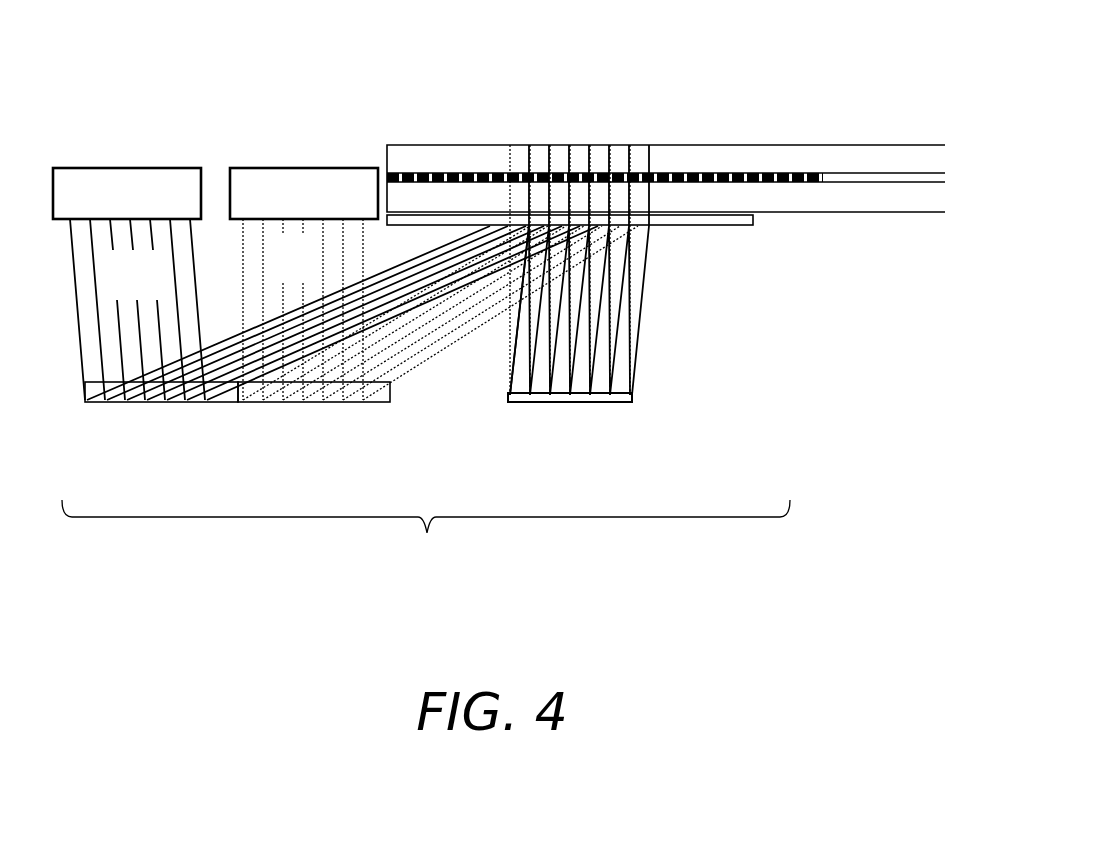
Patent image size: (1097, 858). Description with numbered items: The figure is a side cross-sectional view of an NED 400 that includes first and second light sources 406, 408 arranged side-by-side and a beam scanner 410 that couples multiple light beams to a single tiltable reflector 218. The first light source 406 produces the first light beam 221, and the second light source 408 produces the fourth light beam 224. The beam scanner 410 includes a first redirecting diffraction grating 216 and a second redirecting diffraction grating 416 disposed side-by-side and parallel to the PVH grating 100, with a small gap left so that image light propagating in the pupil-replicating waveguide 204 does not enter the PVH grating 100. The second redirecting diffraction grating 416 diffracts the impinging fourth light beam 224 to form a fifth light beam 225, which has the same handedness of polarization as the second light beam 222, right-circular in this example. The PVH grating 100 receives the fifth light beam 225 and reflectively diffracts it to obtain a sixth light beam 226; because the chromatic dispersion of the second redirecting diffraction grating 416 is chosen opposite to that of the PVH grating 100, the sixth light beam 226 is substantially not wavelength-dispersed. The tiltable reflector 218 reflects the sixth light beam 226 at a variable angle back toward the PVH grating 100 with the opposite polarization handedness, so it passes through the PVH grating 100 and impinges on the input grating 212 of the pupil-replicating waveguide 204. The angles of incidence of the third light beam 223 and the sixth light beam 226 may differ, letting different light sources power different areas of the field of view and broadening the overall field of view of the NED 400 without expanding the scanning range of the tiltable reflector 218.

The NED 400 is at (466, 36).
The first light source 406 is at (106, 207).
The second light source 408 is at (283, 207).
The first light beam 221 is at (119, 289).
The fourth light beam 224 is at (272, 269).
The second light beam 222 is at (222, 316).
The fifth light beam 225 is at (416, 378).
The first redirecting diffraction grating 216 is at (120, 402).
The second redirecting diffraction grating 416 is at (290, 402).
The pupil-replicating waveguide 204 is at (885, 145).
The input grating 212 is at (697, 173).
The PVH grating 100 is at (705, 226).
The sixth light beam 226 is at (643, 286).
The third light beam 223 is at (495, 372).
The tiltable reflector 218 is at (593, 402).
The beam scanner 410 is at (426, 533).